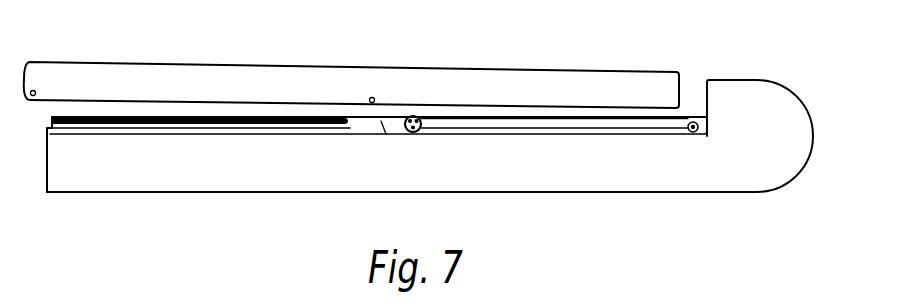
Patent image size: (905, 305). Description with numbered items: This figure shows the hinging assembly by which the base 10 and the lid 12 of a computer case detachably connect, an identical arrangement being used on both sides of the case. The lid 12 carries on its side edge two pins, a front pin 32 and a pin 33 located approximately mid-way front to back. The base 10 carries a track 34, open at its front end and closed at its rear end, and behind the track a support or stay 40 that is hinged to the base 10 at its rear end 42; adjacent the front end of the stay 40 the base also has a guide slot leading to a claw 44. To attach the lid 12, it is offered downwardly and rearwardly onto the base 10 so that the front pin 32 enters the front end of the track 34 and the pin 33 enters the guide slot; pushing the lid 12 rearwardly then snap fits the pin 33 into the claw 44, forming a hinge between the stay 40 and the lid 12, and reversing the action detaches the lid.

The base 10 is at (683, 202).
The lid 12 is at (312, 83).
The front pin 32 is at (35, 92).
The pin 33 is at (375, 100).
The track 34 is at (197, 103).
The stay 40 is at (607, 104).
The rear end of the stay 42 is at (694, 108).
The claw 44 is at (416, 117).